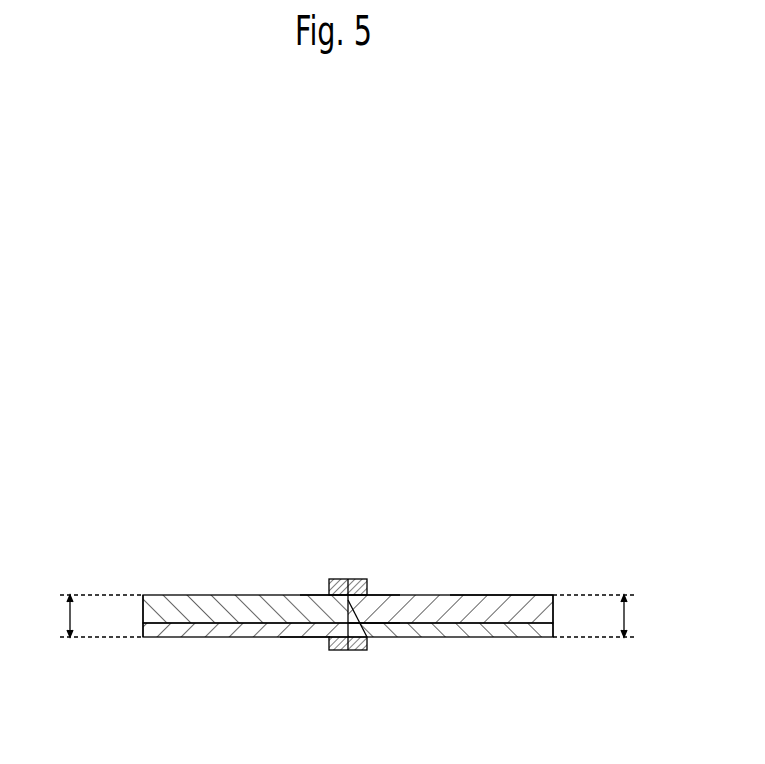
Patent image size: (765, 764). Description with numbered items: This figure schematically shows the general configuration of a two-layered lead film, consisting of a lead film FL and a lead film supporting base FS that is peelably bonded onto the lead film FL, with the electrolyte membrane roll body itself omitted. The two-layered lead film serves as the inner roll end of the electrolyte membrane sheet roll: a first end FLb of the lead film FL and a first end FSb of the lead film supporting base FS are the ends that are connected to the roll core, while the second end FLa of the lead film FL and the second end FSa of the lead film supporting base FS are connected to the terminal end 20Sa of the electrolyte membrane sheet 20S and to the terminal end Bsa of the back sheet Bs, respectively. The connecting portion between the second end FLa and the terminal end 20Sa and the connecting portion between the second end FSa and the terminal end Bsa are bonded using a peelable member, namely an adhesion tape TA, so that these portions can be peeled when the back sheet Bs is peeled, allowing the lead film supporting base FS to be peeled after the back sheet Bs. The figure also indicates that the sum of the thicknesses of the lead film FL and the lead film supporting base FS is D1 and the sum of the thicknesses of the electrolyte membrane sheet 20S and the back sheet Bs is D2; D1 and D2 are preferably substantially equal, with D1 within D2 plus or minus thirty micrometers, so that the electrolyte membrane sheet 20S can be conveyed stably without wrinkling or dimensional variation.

The lead film supporting base FS is at (178, 595).
The lead film FL is at (157, 637).
The first end of the lead film supporting base FSb is at (143, 612).
The first end of the lead film FLb is at (143, 632).
The second end of the lead film supporting base FSa is at (350, 596).
The second end of the lead film FLa is at (328, 638).
The adhesion tape TA is at (348, 580).
The terminal end of the back sheet Bsa is at (363, 622).
The terminal end of the electrolyte membrane sheet 20Sa is at (373, 627).
The back sheet Bs is at (535, 595).
The electrolyte membrane sheet 20S is at (540, 637).
The sum of the thicknesses of the lead film and the lead film supporting base D1 is at (85, 616).
The sum of the thicknesses of the electrolyte membrane sheet and the back sheet D2 is at (610, 616).